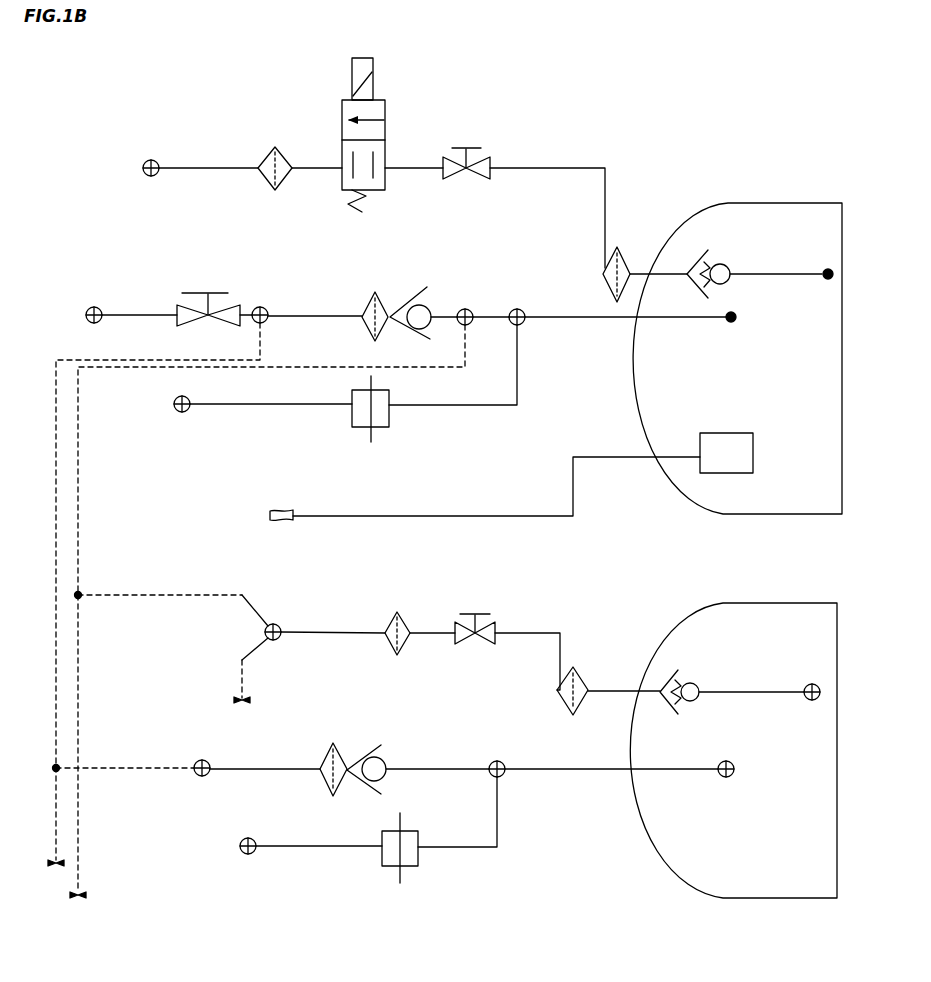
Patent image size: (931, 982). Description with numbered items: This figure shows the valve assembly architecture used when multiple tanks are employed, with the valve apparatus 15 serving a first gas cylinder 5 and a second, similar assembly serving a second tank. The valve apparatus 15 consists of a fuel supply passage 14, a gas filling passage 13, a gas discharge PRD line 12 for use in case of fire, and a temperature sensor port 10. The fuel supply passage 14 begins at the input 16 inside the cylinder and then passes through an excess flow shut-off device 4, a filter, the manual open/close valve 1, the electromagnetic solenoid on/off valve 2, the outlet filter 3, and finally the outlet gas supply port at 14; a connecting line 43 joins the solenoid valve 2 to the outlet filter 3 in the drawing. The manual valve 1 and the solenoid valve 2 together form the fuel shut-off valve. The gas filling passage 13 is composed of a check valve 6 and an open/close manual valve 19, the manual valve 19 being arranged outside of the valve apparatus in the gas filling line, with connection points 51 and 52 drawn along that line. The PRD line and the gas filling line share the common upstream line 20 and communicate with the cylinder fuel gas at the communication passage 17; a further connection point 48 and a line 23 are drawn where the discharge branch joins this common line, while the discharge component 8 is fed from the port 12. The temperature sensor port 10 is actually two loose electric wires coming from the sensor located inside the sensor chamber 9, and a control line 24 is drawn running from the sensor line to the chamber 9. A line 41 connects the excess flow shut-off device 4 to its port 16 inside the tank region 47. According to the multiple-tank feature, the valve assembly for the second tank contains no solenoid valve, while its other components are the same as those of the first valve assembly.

The manual open/close valve 1 is at (467, 143).
The electromagnetic solenoid on/off valve 2 is at (363, 123).
The outlet filter 3 is at (266, 153).
The excess flow shut-off device 4 is at (708, 240).
The gas cylinder 5 is at (691, 210).
The check valve 6 is at (398, 308).
The pressure regulator 8 is at (342, 419).
The sensor chamber 9 is at (726, 453).
The temperature sensor port 10 is at (265, 508).
The gas discharge PRD line 12 is at (170, 411).
The gas filling passage 13 is at (88, 325).
The fuel supply passage 14 is at (135, 160).
The valve apparatus 15 is at (600, 147).
The input 16 is at (826, 282).
The communication passage 17 is at (723, 324).
The open/close manual valve 19 is at (200, 285).
The common upstream line 20 is at (667, 325).
The line 23 is at (491, 307).
The control line 24 is at (497, 520).
The line 41 is at (785, 262).
The line 43 is at (318, 165).
The tank 47 is at (795, 482).
The port 48 is at (524, 307).
The port 51 is at (263, 302).
The port 52 is at (465, 306).